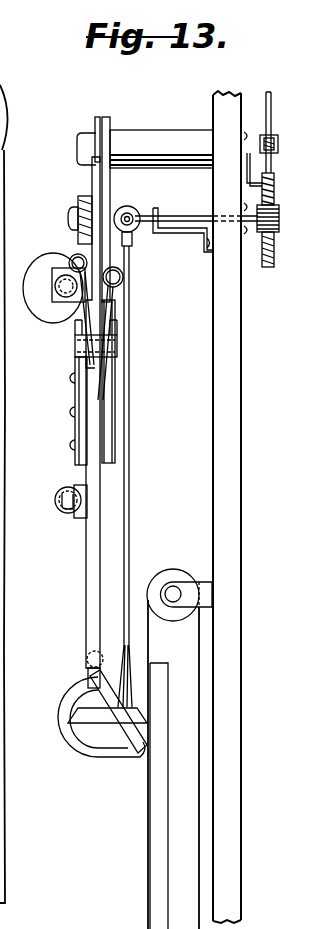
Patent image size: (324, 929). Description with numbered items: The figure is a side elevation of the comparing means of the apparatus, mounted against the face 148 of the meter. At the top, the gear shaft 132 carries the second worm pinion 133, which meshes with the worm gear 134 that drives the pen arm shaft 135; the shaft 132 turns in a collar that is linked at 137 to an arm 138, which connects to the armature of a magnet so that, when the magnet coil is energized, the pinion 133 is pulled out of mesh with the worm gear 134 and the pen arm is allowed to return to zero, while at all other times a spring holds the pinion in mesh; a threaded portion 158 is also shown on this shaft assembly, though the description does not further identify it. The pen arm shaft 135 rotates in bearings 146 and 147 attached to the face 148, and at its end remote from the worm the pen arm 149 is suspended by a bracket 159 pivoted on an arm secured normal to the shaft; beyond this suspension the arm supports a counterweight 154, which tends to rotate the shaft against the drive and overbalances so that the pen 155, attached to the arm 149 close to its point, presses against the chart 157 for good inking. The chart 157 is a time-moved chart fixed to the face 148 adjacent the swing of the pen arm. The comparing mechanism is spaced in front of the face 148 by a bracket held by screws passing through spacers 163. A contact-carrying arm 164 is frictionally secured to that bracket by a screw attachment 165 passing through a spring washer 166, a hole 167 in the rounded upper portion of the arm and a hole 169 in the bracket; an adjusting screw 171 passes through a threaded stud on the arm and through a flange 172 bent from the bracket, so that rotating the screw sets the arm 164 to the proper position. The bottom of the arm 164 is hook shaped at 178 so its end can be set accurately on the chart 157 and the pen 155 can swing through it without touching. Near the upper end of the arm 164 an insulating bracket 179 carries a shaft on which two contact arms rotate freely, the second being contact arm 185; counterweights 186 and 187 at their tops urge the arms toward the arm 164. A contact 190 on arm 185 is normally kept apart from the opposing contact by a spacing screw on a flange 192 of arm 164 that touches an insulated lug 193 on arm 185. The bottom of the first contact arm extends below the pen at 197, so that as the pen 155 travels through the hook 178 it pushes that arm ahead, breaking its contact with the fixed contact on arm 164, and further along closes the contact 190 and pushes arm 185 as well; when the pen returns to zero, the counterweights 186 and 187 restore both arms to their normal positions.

The gear shaft 132 is at (272, 112).
The second worm pinion 133 is at (279, 215).
The worm gear 134 is at (274, 252).
The pen arm shaft 135 is at (180, 214).
The link 137 is at (272, 153).
The arm 138 is at (278, 146).
The bearing 146 is at (243, 237).
The bearing 147 is at (187, 230).
The face 148 is at (236, 333).
The pen arm 149 is at (130, 540).
The counterweight 154 is at (133, 228).
The pen 155 is at (62, 728).
The chart 157 is at (148, 862).
The threaded sleeve 158 is at (275, 187).
The bracket 159 is at (245, 143).
The spacer 163 is at (173, 113).
The contact-carrying arm 164 is at (68, 684).
The screw attachment 165 is at (72, 210).
The spring washer 166 is at (92, 190).
The hole 167 is at (88, 212).
The hole 169 is at (112, 216).
The screw 171 is at (62, 285).
The flange 172 is at (55, 252).
The hook 178 is at (78, 753).
The insulating bracket 179 is at (80, 452).
The contact arm 185 is at (97, 476).
The counterweight 186 is at (70, 262).
The counterweight 187 is at (122, 281).
The contact 190 is at (88, 660).
The flange 192 is at (75, 518).
The insulated lug 193 is at (70, 490).
The extension of arm 184 197 is at (118, 748).